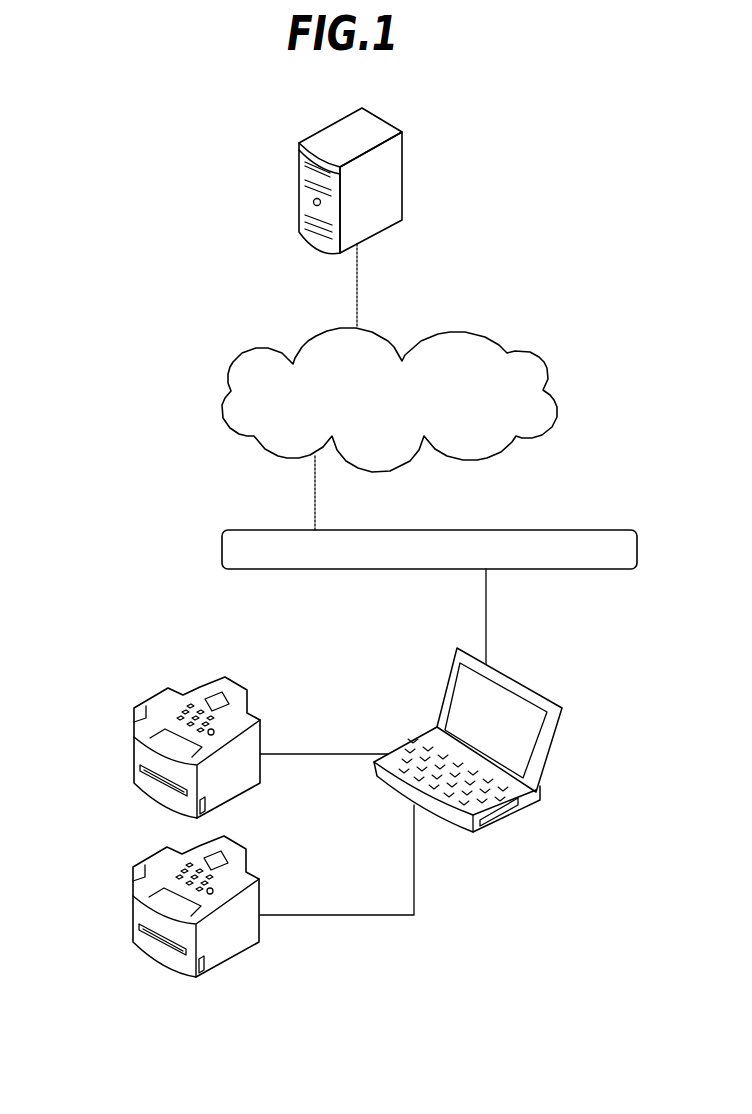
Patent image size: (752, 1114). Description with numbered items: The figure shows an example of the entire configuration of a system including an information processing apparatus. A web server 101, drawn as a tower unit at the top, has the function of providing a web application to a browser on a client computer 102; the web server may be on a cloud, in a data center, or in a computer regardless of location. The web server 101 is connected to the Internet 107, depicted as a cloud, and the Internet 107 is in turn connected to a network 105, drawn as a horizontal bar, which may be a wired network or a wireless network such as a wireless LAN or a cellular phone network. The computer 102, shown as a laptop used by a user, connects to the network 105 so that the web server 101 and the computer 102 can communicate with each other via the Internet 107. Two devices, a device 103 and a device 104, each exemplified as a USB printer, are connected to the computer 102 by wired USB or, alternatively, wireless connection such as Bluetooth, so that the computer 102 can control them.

The web server 101 is at (405, 178).
The client computer 102 is at (527, 680).
The device 103 is at (133, 756).
The device 104 is at (132, 914).
The network 105 is at (567, 530).
The Internet 107 is at (458, 332).